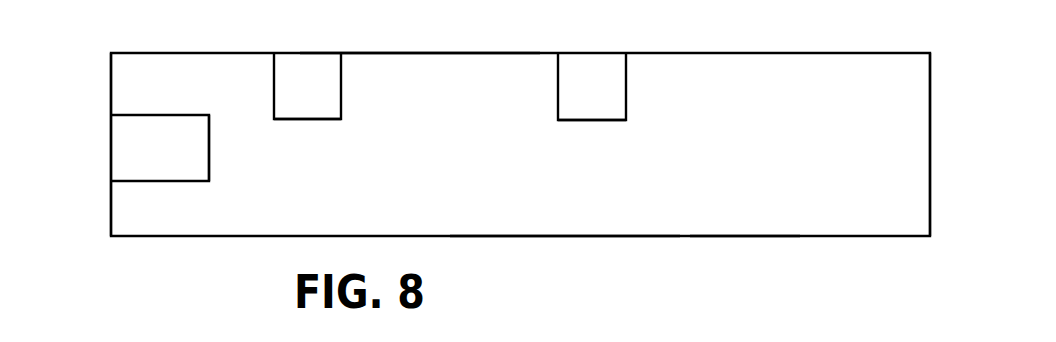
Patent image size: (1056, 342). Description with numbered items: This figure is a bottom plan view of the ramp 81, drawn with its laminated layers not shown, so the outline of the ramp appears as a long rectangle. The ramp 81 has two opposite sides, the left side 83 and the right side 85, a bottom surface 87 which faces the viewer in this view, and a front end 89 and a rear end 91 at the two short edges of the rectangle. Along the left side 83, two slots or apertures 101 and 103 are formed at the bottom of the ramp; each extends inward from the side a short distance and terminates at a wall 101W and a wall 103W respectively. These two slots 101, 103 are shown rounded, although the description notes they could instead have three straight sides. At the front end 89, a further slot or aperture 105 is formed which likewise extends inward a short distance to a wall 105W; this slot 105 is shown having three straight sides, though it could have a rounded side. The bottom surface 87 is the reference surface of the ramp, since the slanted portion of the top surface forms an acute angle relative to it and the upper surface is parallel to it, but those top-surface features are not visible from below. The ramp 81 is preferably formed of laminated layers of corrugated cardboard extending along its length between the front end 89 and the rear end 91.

The ramp 81 is at (969, 195).
The left side 83 is at (455, 53).
The right side 85 is at (572, 238).
The bottom surface 87 is at (737, 196).
The front end 89 is at (111, 80).
The rear end 91 is at (930, 206).
The slot 101 is at (312, 68).
The wall 101W is at (292, 108).
The slot 103 is at (583, 73).
The wall 103W is at (601, 118).
The slot 105 is at (111, 160).
The wall 105W is at (209, 150).